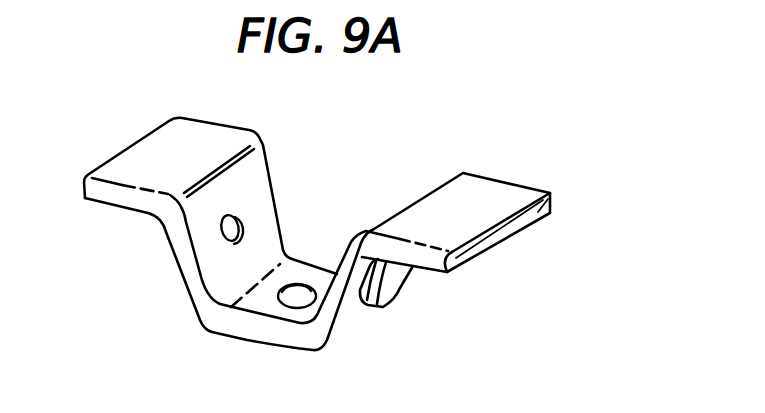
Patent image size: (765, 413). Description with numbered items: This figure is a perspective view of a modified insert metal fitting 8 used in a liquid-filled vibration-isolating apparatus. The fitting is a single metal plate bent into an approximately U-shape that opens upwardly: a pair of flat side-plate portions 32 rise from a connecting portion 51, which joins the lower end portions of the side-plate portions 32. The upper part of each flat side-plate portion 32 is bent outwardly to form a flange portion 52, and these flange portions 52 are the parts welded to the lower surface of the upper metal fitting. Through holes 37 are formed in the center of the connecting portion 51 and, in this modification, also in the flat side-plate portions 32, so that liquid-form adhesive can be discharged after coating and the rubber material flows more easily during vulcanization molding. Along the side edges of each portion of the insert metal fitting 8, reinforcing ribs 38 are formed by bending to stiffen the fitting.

The insert metal fitting 8 is at (468, 152).
The flat side-plate portion 32 is at (252, 186).
The through hole 37 is at (297, 292).
The reinforcing rib 38 is at (188, 243).
The connecting portion 51 is at (260, 305).
The flange portion 52 is at (153, 152).